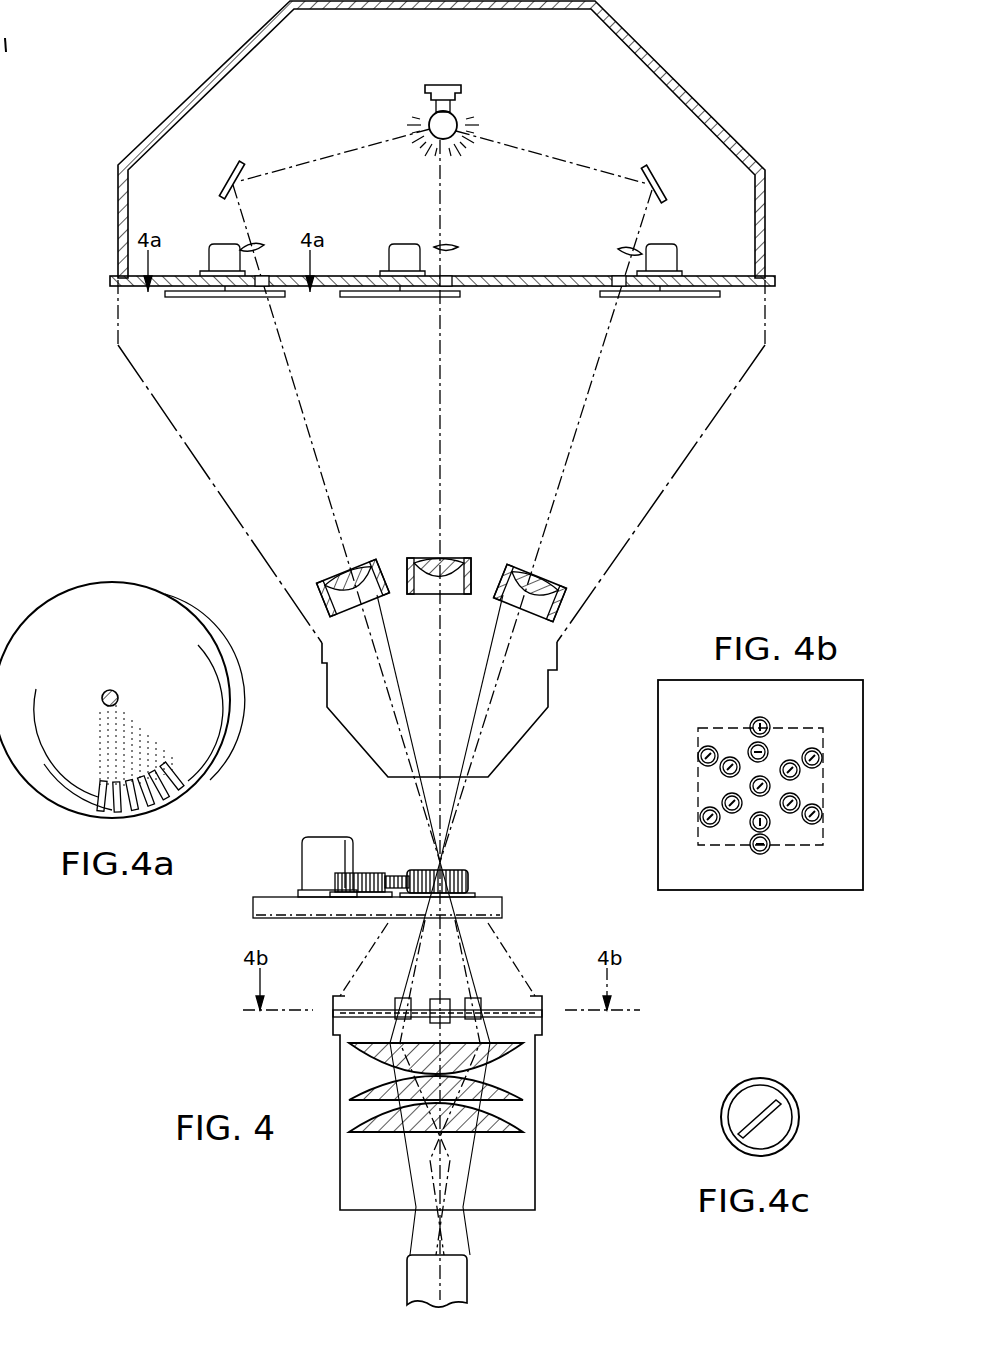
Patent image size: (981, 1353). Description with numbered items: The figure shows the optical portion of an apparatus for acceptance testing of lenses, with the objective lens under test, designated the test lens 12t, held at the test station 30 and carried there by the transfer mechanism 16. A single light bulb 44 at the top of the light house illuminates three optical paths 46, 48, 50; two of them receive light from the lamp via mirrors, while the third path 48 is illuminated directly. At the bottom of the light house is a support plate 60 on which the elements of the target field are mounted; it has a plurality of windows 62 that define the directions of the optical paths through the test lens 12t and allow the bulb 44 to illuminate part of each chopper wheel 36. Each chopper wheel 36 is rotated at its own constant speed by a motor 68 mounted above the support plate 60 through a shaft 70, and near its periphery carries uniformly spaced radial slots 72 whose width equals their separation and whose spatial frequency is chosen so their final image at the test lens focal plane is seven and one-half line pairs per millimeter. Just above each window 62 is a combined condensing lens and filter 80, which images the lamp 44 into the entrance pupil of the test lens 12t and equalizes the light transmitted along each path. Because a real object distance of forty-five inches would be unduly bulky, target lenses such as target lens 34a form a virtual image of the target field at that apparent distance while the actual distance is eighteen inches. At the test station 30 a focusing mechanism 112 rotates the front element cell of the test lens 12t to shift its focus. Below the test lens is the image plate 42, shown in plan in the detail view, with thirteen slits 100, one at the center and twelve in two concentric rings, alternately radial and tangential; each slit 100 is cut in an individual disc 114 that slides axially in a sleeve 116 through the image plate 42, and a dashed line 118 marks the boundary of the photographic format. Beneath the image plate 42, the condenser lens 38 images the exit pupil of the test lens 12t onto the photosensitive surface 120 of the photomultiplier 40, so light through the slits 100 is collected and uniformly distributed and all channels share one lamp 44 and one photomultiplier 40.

In FIG. 4, the test lens 12t is at (470, 880).
In FIG. 4, the transfer mechanism 16 is at (503, 908).
In FIG. 4, the test station 30 is at (463, 857).
In FIG. 4, the target lens 34a is at (372, 565).
In FIG. 4, the chopper wheel 36 is at (258, 298).
In FIG. 4a, the chopper wheel 36 is at (197, 620).
In FIG. 4, the condenser lens 38 is at (548, 1093).
In FIG. 4, the photomultiplier 40 is at (463, 1278).
In FIG. 4, the image plate 42 is at (522, 1000).
In FIG. 4b, the image plate 42 is at (668, 707).
In FIG. 4, the light bulb 44 is at (430, 120).
In FIG. 4, the optical path 46 is at (311, 444).
In FIG. 4, the optical path 48 is at (444, 425).
In FIG. 4, the optical path 50 is at (578, 432).
In FIG. 4, the support plate 60 is at (517, 278).
In FIG. 4, the window 62 is at (264, 277).
In FIG. 4, the motor 68 is at (226, 244).
In FIG. 4a, the shaft 70 is at (116, 692).
In FIG. 4a, the radial slot 72 is at (186, 782).
In FIG. 4, the combined condensing lens and filter 80 is at (261, 244).
In FIG. 4c, the slit 100 is at (745, 1105).
In FIG. 4, the focusing mechanism 112 is at (302, 837).
In FIG. 4b, the disc 114 is at (818, 808).
In FIG. 4c, the disc 114 is at (786, 1114).
In FIG. 4, the sleeve 116 is at (482, 1003).
In FIG. 4b, the sleeve 116 is at (818, 752).
In FIG. 4c, the sleeve 116 is at (769, 1079).
In FIG. 4b, the dashed line 118 is at (740, 847).
In FIG. 4, the photosensitive surface 120 is at (420, 1255).